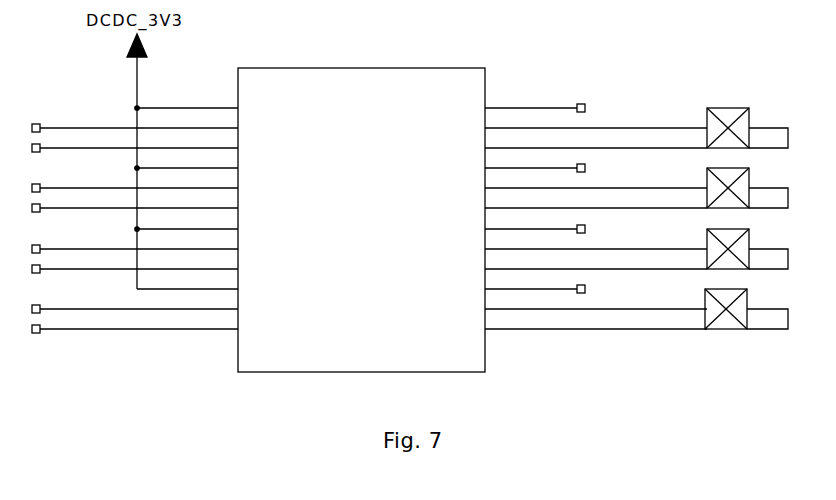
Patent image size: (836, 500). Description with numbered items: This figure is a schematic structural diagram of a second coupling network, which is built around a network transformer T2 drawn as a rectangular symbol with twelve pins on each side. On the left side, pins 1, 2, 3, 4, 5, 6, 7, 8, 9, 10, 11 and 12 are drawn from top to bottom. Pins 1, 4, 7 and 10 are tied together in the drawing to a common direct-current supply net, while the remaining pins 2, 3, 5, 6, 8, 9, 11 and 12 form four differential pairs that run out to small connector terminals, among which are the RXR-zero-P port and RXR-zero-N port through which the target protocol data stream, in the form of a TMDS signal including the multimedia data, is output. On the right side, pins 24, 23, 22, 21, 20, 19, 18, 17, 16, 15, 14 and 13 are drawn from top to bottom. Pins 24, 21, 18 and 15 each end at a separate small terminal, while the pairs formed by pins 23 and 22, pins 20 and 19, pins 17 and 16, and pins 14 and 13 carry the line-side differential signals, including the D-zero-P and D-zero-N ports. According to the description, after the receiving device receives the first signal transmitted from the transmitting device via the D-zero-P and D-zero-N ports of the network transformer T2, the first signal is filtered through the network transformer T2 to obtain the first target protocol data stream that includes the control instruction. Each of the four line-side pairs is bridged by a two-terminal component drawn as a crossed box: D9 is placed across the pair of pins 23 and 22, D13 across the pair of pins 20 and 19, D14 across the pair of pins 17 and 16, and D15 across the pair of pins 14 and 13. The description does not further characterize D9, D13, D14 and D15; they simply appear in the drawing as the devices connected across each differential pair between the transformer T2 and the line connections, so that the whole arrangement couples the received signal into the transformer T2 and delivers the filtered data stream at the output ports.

The network transformer T2 is at (399, 224).
The ESD protection diode ESD7951 D9 is at (732, 120).
The ESD protection diode ESD7951 D13 is at (729, 180).
The ESD protection diode ESD7951 D14 is at (729, 241).
The ESD protection diode ESD7951 D15 is at (728, 301).
The pin TCT1 1 is at (187, 102).
The pin TD1+ 2 is at (135, 123).
The pin TD1- 3 is at (135, 143).
The pin TCT2 4 is at (187, 162).
The pin TD2+ 5 is at (135, 183).
The pin TD2- 6 is at (135, 203).
The pin TCT3 7 is at (187, 223).
The pin TD3+ 8 is at (135, 244).
The pin TD3- 9 is at (135, 264).
The pin TCT4 10 is at (187, 283).
The pin TD4+ 11 is at (135, 304).
The pin TD4- 12 is at (135, 324).
The pin MX4- 13 is at (596, 323).
The pin MX4+ 14 is at (596, 303).
The pin MCT4 15 is at (535, 284).
The pin MX3- 16 is at (596, 263).
The pin MX3+ 17 is at (596, 243).
The pin MCT3 18 is at (535, 224).
The pin MX2- 19 is at (596, 202).
The pin MX2+ 20 is at (596, 182).
The pin MCT2 21 is at (535, 163).
The pin MX1- 22 is at (596, 142).
The pin MX1+ 23 is at (596, 122).
The pin MCT1 24 is at (535, 103).